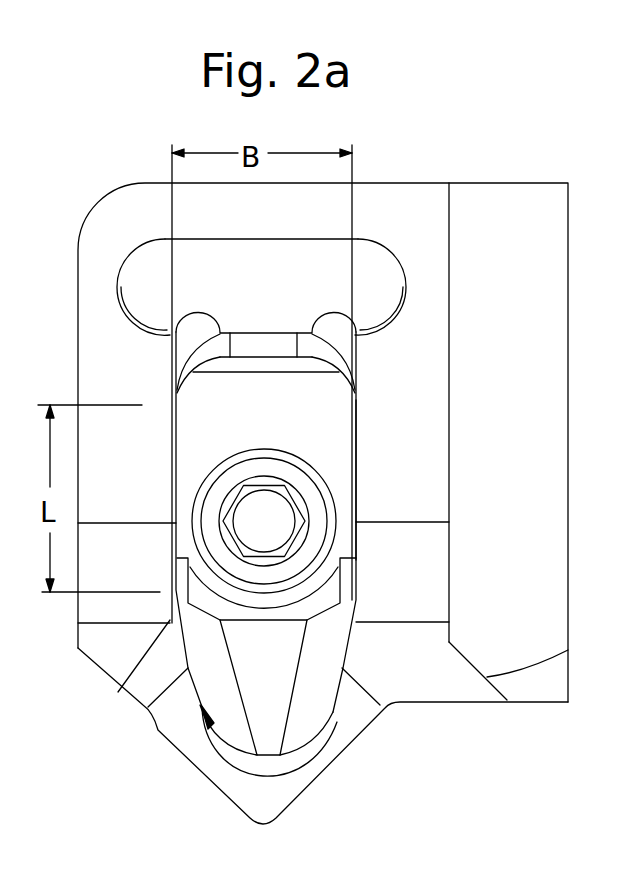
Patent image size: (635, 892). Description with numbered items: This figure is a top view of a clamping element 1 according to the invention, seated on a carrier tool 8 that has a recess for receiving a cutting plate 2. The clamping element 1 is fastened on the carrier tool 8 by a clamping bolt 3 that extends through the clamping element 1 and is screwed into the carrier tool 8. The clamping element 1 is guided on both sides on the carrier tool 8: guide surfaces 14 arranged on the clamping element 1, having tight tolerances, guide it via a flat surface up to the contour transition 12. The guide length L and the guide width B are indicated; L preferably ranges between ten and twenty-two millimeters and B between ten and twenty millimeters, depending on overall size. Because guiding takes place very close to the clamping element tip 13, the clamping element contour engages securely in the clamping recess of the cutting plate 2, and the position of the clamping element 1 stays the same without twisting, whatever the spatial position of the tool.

The clamping element 1 is at (187, 410).
The cutting plate 2 is at (300, 786).
The clamping bolt 3 is at (305, 523).
The carrier tool 8 is at (521, 198).
The contour transition 12 is at (118, 692).
The clamping element tip 13 is at (215, 747).
The guide surfaces 14 is at (355, 443).